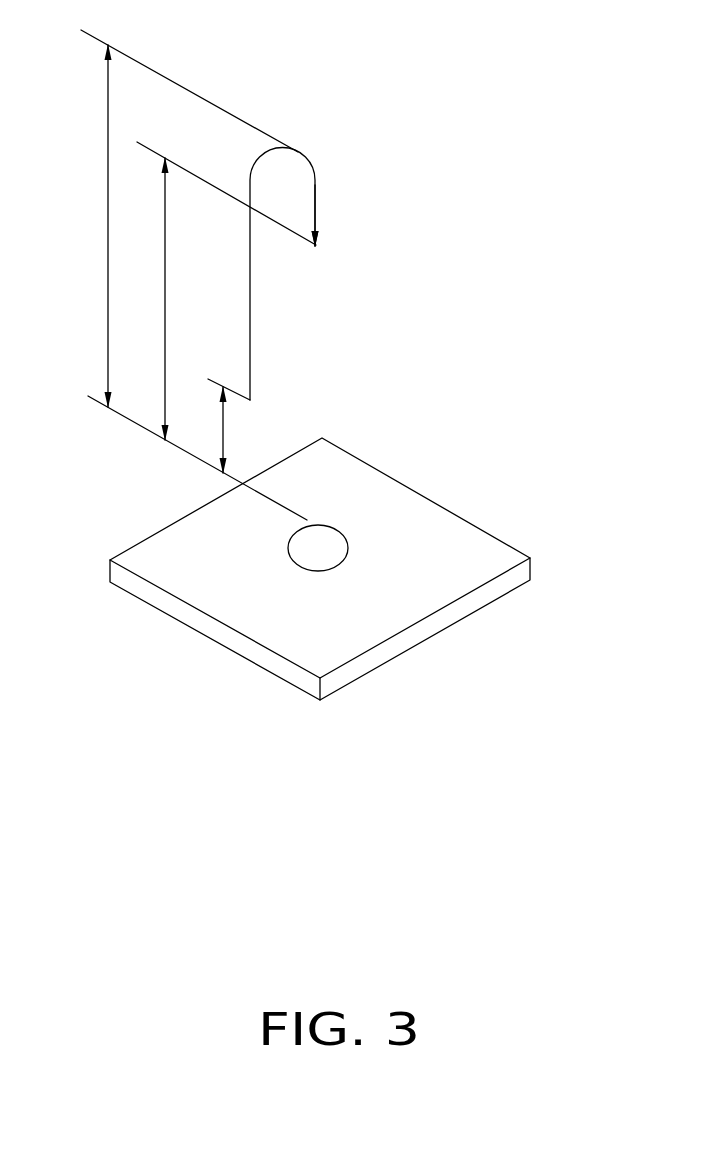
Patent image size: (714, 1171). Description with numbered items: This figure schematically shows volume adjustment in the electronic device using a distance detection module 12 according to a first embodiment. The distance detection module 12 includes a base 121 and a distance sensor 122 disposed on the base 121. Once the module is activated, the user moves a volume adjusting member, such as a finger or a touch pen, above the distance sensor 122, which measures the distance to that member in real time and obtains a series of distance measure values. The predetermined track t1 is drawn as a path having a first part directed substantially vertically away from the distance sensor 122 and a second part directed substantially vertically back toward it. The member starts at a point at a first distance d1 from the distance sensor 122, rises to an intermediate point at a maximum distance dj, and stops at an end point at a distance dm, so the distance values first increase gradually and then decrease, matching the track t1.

The distance detection module 12 is at (301, 34).
The base 121 is at (445, 538).
The distance sensor 122 is at (320, 543).
The predetermined track t1 is at (298, 152).
The maximum distance dj is at (84, 226).
The end-point distance dm is at (188, 299).
The first distance d1 is at (243, 430).